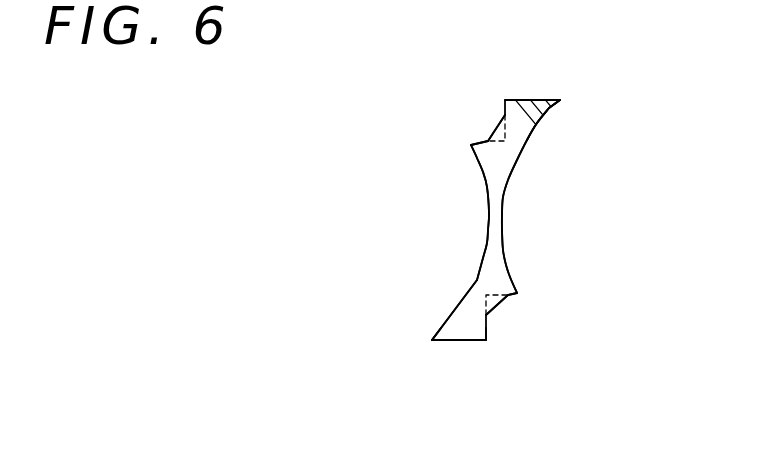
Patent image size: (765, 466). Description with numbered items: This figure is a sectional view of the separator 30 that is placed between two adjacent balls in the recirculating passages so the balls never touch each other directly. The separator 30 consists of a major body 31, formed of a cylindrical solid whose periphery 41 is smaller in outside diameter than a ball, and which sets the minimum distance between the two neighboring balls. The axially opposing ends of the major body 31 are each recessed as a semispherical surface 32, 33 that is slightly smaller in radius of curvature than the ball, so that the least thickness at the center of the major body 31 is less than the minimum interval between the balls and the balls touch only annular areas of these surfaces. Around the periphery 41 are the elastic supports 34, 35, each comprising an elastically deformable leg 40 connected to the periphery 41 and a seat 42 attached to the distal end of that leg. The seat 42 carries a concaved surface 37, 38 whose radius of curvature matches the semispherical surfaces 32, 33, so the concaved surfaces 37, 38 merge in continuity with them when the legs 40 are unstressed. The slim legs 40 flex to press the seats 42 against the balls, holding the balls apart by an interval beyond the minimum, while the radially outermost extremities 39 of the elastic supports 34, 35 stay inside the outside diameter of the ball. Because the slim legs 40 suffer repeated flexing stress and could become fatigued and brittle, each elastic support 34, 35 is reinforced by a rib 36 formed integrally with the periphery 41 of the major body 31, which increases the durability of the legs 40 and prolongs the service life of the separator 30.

The separator 30 is at (466, 129).
The major body 31 is at (510, 187).
The semispherical surface 32 is at (488, 238).
The semispherical surface 33 is at (502, 218).
The elastic support 34 is at (452, 342).
The elastic support 35 is at (523, 105).
The rib 36 is at (495, 128).
The concaved surface 37 is at (450, 326).
The concaved surface 38 is at (537, 121).
The radially outermost extremity 39 is at (560, 100).
The elastically deformable leg 40 is at (514, 129).
The periphery 41 is at (481, 141).
The seat 42 is at (550, 108).